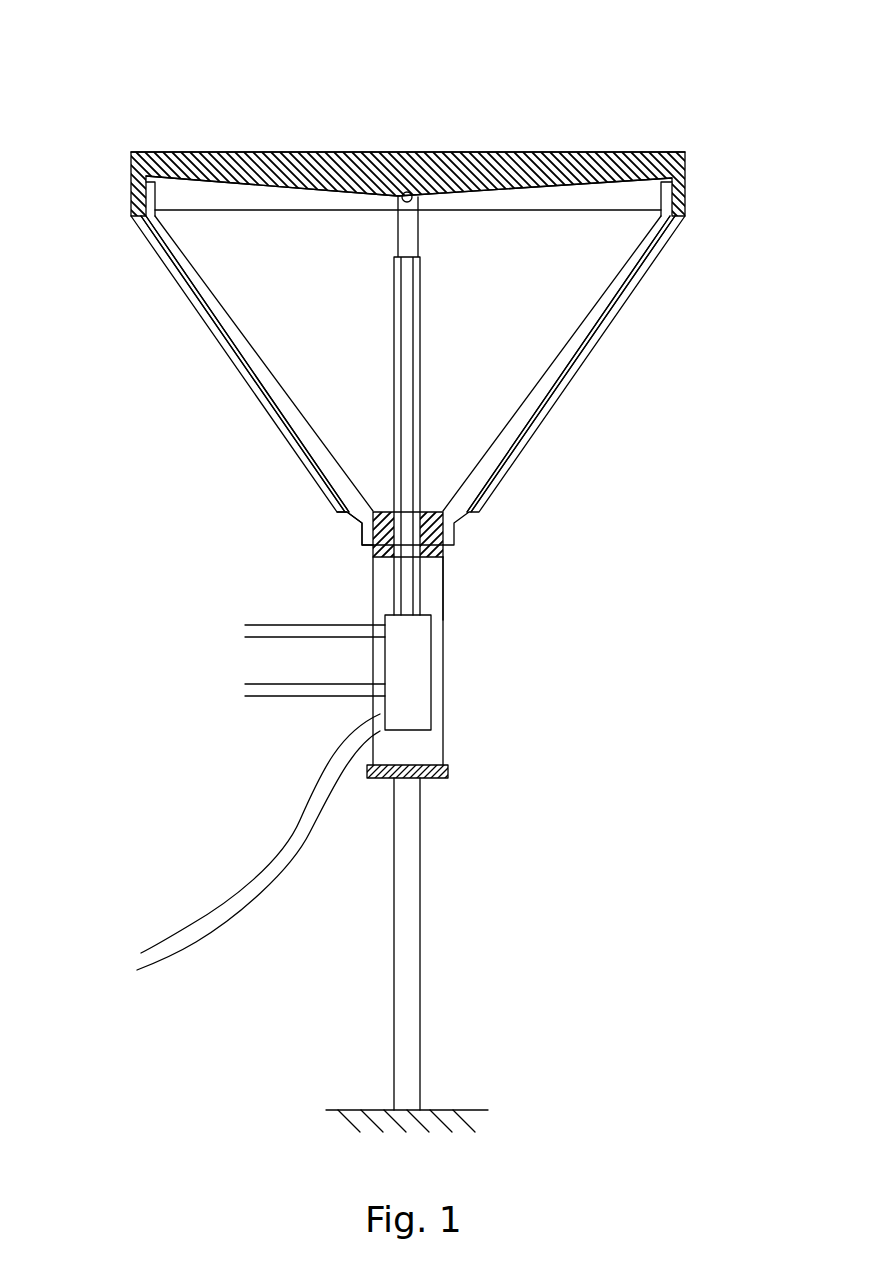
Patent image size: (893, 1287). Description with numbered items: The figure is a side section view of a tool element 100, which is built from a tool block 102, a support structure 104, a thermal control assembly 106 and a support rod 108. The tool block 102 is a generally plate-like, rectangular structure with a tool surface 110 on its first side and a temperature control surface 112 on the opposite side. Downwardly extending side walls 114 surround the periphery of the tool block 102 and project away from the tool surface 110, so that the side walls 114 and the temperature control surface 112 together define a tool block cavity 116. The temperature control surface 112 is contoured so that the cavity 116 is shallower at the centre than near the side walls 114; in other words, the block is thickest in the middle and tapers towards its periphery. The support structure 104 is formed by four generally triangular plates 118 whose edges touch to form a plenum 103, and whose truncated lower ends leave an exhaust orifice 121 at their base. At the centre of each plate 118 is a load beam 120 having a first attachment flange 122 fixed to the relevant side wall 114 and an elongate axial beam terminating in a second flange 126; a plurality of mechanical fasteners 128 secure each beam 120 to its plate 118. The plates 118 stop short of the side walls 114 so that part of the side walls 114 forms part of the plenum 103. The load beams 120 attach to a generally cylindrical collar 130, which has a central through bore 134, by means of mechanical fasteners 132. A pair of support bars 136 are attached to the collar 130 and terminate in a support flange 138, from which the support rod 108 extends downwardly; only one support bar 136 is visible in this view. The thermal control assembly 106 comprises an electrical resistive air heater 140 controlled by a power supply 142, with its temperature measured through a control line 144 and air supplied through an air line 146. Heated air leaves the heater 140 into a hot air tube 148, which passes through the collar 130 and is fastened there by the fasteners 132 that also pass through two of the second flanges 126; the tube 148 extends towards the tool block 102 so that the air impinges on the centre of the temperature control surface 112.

The tool element 100 is at (741, 56).
The tool block 102 is at (514, 165).
The plenum 103 is at (335, 336).
The support structure 104 is at (123, 443).
The thermal control assembly 106 is at (305, 578).
The support rod 108 is at (420, 893).
The tool surface 110 is at (236, 152).
The temperature control surface 112 is at (293, 205).
The side walls 114 is at (130, 184).
The tool block cavity 116 is at (510, 205).
The triangular plates 118 is at (483, 334).
The load beam 120 is at (548, 388).
The exhaust orifice 121 is at (375, 498).
The first attachment flange 122 is at (652, 212).
The second flange 126 is at (455, 545).
The mechanical fasteners 128 is at (662, 240).
The collar 130 is at (445, 560).
The mechanical fasteners 132 is at (360, 540).
The central through bore 134 is at (378, 562).
The support bars 136 is at (445, 660).
The support flange 138 is at (450, 771).
The electrical resistive air heater 140 is at (420, 692).
The power supply 142 is at (283, 699).
The control line 144 is at (283, 640).
The air line 146 is at (250, 887).
The hot air tube 148 is at (420, 395).